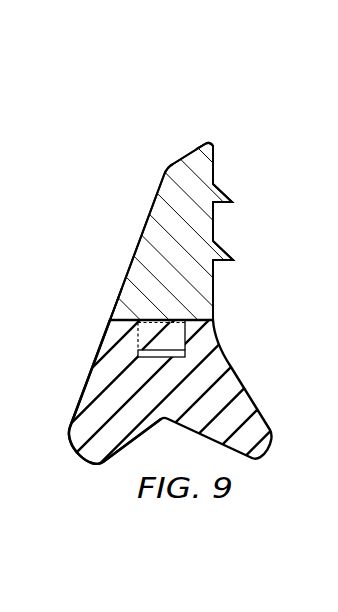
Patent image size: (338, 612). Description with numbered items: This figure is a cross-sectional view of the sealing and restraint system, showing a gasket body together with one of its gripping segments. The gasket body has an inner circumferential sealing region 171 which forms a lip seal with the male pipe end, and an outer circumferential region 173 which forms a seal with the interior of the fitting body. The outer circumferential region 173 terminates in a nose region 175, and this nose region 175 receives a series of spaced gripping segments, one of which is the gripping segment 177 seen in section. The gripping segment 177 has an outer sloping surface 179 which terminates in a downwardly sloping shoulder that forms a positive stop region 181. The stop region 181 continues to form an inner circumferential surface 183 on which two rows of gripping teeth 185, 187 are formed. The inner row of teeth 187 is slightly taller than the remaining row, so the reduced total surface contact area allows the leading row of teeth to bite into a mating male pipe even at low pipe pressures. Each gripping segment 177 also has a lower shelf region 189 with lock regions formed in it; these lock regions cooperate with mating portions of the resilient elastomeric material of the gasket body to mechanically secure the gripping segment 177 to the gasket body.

The inner circumferential sealing region 171 is at (238, 373).
The outer circumferential region 173 is at (84, 385).
The nose region 175 is at (113, 313).
The gripping segment 177 is at (156, 231).
The outer sloping surface 179 is at (156, 193).
The positive stop region 181 is at (189, 152).
The inner circumferential surface 183 is at (214, 158).
The gripping teeth 185 is at (226, 190).
The inner row of teeth 187 is at (226, 247).
The lower shelf region 189 is at (166, 349).